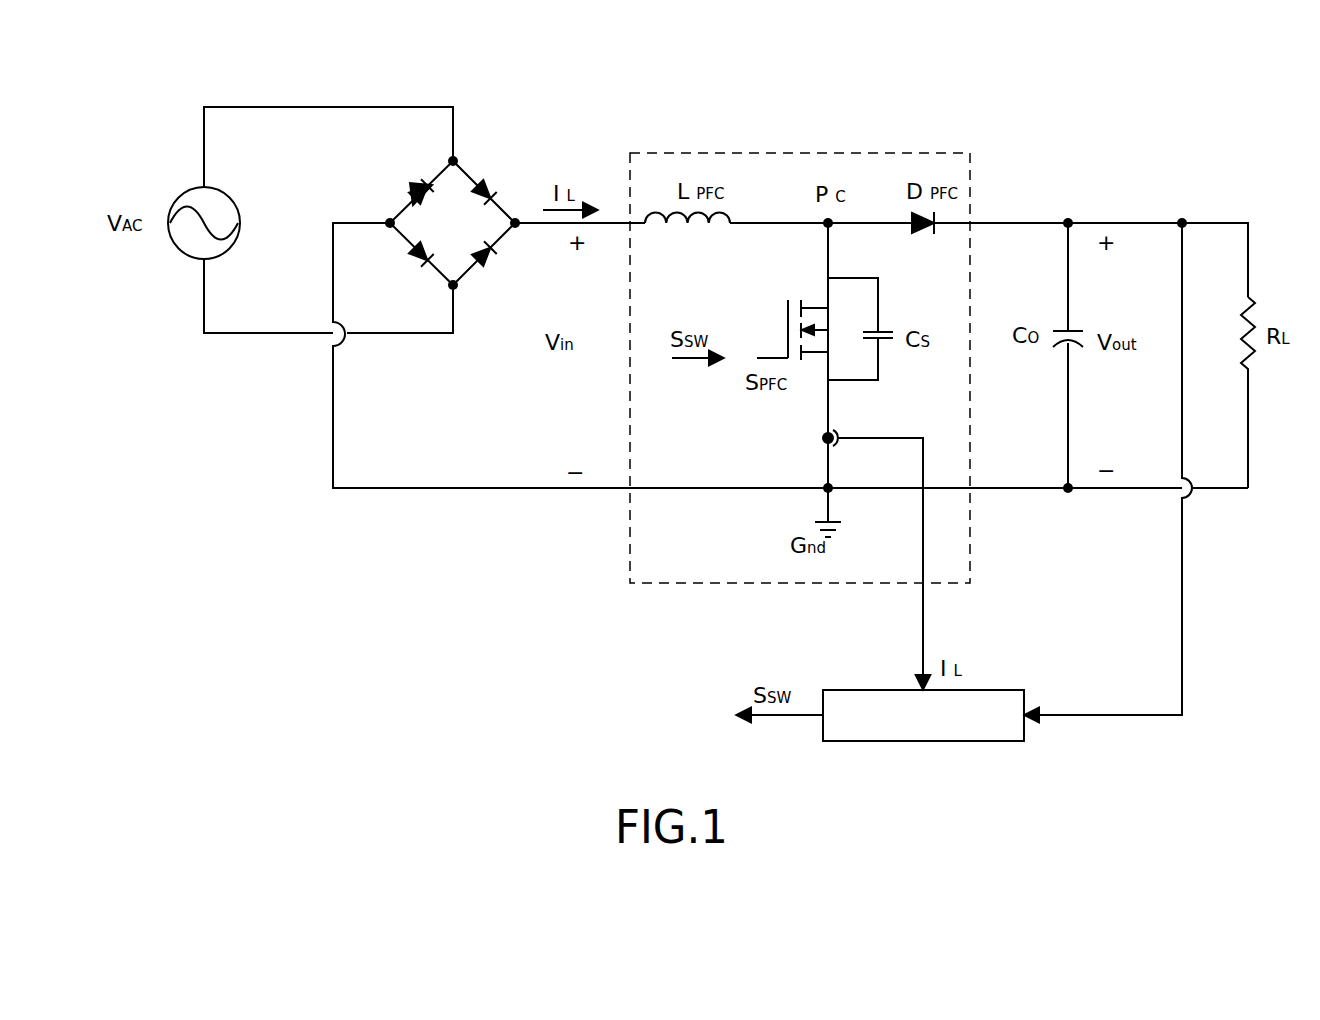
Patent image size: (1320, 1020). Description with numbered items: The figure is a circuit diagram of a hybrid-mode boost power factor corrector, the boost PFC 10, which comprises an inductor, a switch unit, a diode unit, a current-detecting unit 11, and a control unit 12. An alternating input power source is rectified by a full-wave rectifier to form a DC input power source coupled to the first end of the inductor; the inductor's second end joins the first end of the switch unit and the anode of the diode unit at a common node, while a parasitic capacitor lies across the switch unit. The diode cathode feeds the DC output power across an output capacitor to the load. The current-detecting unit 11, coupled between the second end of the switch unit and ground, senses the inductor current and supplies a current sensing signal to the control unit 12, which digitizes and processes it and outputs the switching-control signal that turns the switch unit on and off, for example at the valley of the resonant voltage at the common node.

The boost PFC 10 is at (938, 132).
The current-detecting unit 11 is at (823, 439).
The control unit 12 is at (1004, 743).